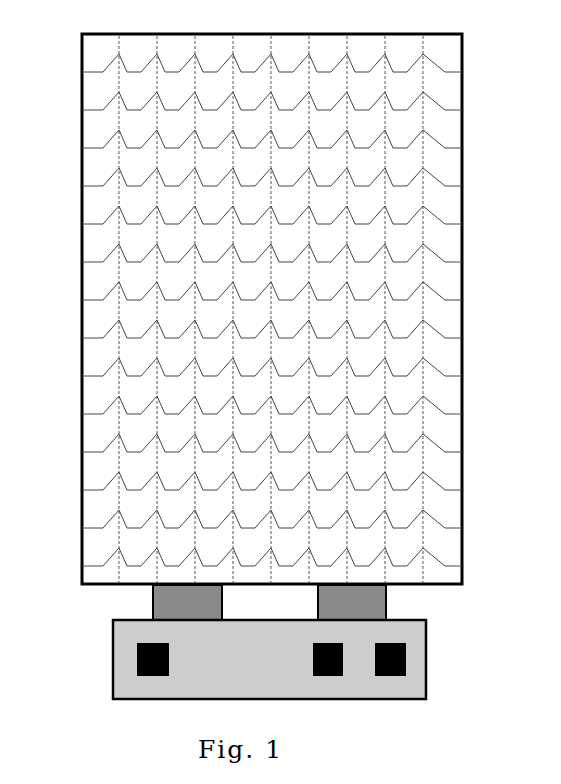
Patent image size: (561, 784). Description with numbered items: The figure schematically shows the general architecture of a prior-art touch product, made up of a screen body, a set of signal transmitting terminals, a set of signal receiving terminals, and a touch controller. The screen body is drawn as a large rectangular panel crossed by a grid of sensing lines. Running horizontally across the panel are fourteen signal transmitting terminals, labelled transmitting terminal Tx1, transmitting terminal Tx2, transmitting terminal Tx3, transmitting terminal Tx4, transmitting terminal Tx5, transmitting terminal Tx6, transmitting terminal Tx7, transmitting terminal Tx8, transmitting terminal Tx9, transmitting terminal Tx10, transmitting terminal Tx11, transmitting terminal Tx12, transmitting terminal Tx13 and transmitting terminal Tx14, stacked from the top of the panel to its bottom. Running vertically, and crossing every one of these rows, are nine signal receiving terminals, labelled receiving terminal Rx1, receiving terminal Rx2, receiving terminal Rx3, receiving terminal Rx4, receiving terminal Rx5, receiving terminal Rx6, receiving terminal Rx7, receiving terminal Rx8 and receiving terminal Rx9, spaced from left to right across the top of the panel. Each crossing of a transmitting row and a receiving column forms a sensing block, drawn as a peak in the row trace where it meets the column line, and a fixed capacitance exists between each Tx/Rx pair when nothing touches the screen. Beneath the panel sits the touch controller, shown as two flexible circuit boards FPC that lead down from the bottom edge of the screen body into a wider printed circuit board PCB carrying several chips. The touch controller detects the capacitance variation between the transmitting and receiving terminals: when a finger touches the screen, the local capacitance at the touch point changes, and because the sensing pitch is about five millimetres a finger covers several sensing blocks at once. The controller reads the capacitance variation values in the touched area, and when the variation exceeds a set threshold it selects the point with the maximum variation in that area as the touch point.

The signal transmitting terminal Tx1 is at (250, 66).
The signal transmitting terminal Tx2 is at (250, 104).
The signal transmitting terminal Tx3 is at (250, 142).
The signal transmitting terminal Tx4 is at (250, 180).
The signal transmitting terminal Tx5 is at (250, 218).
The signal transmitting terminal Tx6 is at (250, 256).
The signal transmitting terminal Tx7 is at (250, 294).
The signal transmitting terminal Tx8 is at (250, 332).
The signal transmitting terminal Tx9 is at (250, 370).
The signal transmitting terminal Tx10 is at (249, 408).
The signal transmitting terminal Tx11 is at (249, 446).
The signal transmitting terminal Tx12 is at (249, 484).
The signal transmitting terminal Tx13 is at (249, 522).
The signal transmitting terminal Tx14 is at (249, 560).
The signal receiving terminal Rx1 is at (118, 300).
The signal receiving terminal Rx2 is at (156, 300).
The signal receiving terminal Rx3 is at (194, 300).
The signal receiving terminal Rx4 is at (232, 300).
The signal receiving terminal Rx5 is at (270, 300).
The signal receiving terminal Rx6 is at (308, 300).
The signal receiving terminal Rx7 is at (346, 300).
The signal receiving terminal Rx8 is at (384, 300).
The signal receiving terminal Rx9 is at (422, 300).
The flexible circuit board FPC is at (269, 602).
The printed circuit board PCB is at (269, 659).